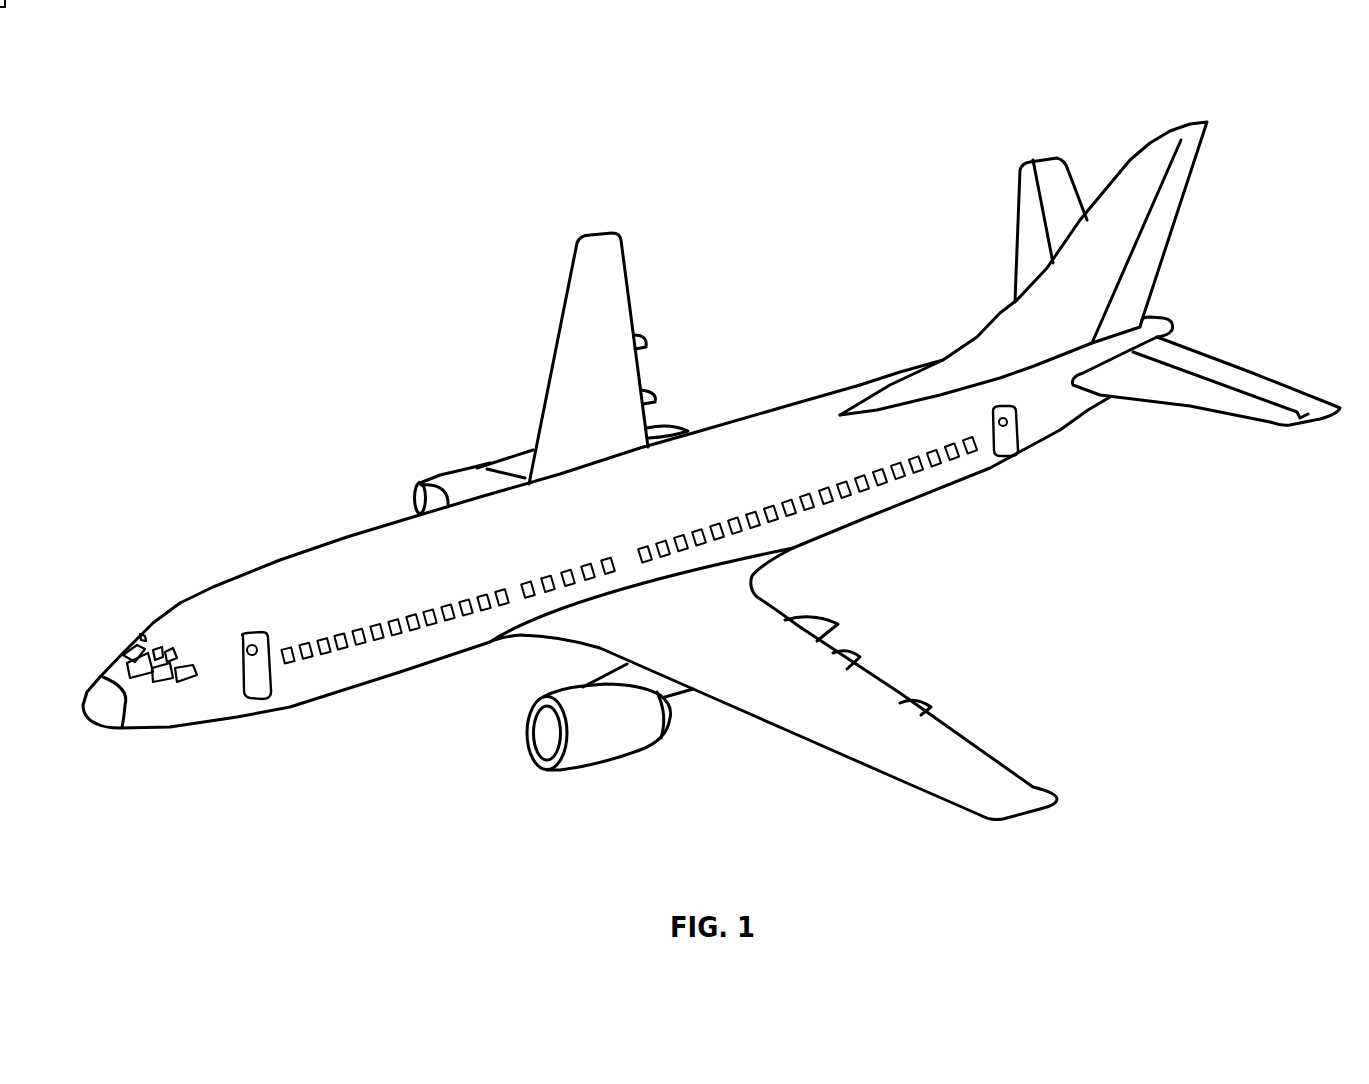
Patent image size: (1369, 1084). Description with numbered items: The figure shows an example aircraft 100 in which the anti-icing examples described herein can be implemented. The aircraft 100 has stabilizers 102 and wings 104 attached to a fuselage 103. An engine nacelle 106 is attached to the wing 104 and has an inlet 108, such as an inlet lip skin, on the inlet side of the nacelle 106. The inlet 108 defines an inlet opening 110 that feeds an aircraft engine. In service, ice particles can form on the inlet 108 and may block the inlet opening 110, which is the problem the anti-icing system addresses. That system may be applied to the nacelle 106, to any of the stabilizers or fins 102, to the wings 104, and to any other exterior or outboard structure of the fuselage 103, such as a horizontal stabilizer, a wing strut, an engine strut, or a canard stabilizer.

The aircraft 100 is at (207, 112).
The stabilizers 102 is at (1130, 160).
The fuselage 103 is at (773, 440).
The wings 104 is at (632, 283).
The engine nacelle 106 is at (622, 762).
The inlet 108 is at (540, 758).
The inlet opening 110 is at (545, 732).